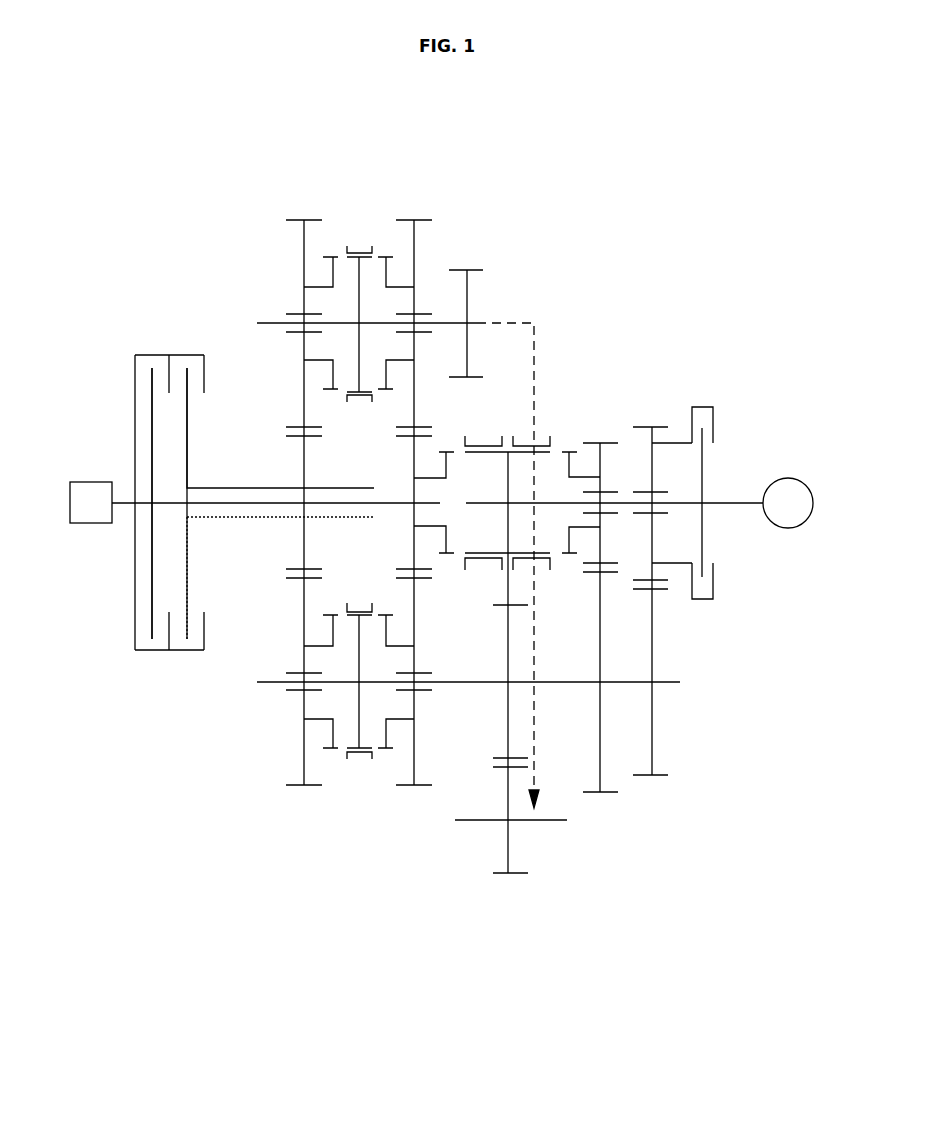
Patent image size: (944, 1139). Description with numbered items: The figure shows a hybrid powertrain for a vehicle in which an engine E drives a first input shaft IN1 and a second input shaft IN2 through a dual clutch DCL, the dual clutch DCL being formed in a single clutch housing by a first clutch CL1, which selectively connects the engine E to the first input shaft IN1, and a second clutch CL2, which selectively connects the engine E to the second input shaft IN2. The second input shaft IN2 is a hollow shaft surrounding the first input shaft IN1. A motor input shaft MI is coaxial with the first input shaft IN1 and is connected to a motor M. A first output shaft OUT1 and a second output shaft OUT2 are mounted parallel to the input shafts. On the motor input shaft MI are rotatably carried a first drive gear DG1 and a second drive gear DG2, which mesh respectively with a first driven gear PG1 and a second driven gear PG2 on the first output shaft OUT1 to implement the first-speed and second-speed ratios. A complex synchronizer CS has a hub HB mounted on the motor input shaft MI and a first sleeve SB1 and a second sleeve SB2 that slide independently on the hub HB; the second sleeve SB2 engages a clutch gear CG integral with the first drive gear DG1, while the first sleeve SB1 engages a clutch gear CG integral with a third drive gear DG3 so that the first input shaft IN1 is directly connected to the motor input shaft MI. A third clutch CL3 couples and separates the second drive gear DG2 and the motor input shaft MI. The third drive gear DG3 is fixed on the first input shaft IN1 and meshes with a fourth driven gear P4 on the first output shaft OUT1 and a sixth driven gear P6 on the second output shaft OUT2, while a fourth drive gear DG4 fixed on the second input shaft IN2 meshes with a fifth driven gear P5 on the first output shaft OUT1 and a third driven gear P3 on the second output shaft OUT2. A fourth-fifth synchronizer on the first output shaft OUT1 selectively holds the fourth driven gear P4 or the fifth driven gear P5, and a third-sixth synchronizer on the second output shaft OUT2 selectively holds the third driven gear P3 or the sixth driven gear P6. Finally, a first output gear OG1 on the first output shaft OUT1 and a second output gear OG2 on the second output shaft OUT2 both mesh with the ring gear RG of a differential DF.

The engine E is at (91, 502).
The motor M is at (788, 503).
The motor input shaft MI is at (737, 503).
The dual clutch DCL is at (118, 270).
The first clutch CL1 is at (140, 348).
The second clutch CL2 is at (189, 348).
The third clutch CL3 is at (728, 416).
The first input shaft IN1 is at (232, 500).
The second input shaft IN2 is at (230, 520).
The first output shaft OUT1 is at (263, 683).
The second output shaft OUT2 is at (263, 322).
The complex synchronizer CS is at (508, 430).
The third driven gear P3 is at (300, 218).
The fourth driven gear P4 is at (410, 786).
The fifth driven gear P5 is at (298, 786).
The sixth driven gear P6 is at (414, 218).
The first drive gear DG1 is at (607, 442).
The second drive gear DG2 is at (663, 426).
The third drive gear DG3 is at (405, 438).
The fourth drive gear DG4 is at (290, 436).
The first output gear OG1 is at (497, 757).
The second output gear OG2 is at (477, 270).
The first sleeve SB1 is at (480, 446).
The second sleeve SB2 is at (540, 446).
The hub HB is at (547, 462).
The clutch gear CG is at (452, 555).
The first driven gear PG1 is at (607, 794).
The second driven gear PG2 is at (657, 777).
The differential DF is at (549, 843).
The ring gear RG is at (520, 875).